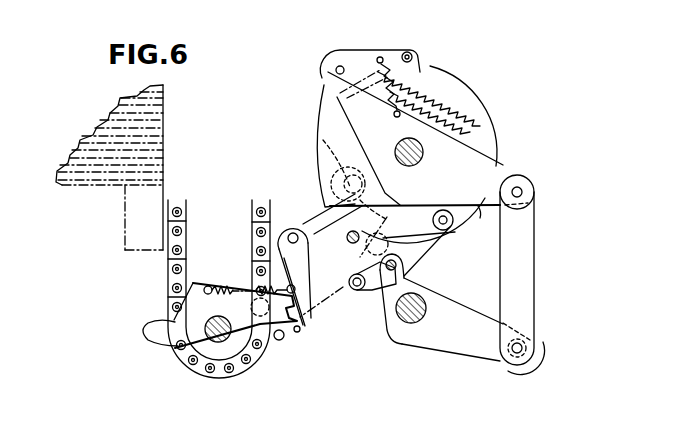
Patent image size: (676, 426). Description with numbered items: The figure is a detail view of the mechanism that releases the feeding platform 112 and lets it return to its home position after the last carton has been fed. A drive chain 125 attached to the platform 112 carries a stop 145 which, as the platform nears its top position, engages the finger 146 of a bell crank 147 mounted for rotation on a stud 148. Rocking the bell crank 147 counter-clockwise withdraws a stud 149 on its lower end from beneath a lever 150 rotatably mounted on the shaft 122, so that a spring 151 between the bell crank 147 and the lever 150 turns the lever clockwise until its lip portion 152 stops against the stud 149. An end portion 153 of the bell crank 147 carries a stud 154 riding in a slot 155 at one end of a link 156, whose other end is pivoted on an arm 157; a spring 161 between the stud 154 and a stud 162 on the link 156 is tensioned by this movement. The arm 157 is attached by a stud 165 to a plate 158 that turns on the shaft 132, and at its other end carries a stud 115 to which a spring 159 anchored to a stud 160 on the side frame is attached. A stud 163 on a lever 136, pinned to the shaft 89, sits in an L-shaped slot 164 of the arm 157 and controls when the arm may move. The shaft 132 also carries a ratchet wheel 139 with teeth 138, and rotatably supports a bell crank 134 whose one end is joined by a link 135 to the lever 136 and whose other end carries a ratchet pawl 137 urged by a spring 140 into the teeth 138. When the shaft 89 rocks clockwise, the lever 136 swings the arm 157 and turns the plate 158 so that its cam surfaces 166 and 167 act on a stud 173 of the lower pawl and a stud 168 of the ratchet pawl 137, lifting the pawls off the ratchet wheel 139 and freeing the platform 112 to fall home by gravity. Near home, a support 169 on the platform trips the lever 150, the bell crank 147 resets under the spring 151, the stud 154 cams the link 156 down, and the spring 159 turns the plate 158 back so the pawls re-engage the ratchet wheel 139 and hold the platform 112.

The shaft 89 is at (417, 325).
The platform 112 is at (155, 178).
The stud 115 is at (362, 290).
The shaft 122 is at (205, 377).
The drive chain 125 is at (253, 205).
The shaft 132 is at (425, 151).
The bell crank 134 is at (508, 167).
The link 135 is at (533, 262).
The lever 136 is at (483, 345).
The ratchet pawl 137 is at (348, 48).
The teeth 138 is at (467, 83).
The ratchet wheel 139 is at (467, 110).
The spring 140 is at (389, 100).
The stop 145 is at (268, 325).
The finger 146 is at (248, 318).
The bell crank 147 is at (284, 262).
The stud 148 is at (293, 232).
The stud 149 is at (297, 332).
The lever 150 is at (160, 347).
The spring 151 is at (232, 283).
The lip portion 152 is at (298, 318).
The end portion 153 is at (312, 222).
The stud 154 is at (333, 186).
The slot 155 is at (328, 143).
The link 156 is at (418, 205).
The arm 157 is at (416, 250).
The plate 158 is at (482, 207).
The spring 159 is at (336, 303).
The stud 160 is at (282, 342).
The spring 161 is at (368, 201).
The stud 162 is at (383, 233).
The stud 163 is at (405, 275).
The L-shaped slot 164 is at (350, 278).
The stud 165 is at (457, 247).
The cam surface 166 is at (352, 240).
The cam surface 167 is at (421, 50).
The stud 168 is at (404, 50).
The support 169 is at (125, 232).
The stud 173 is at (357, 254).